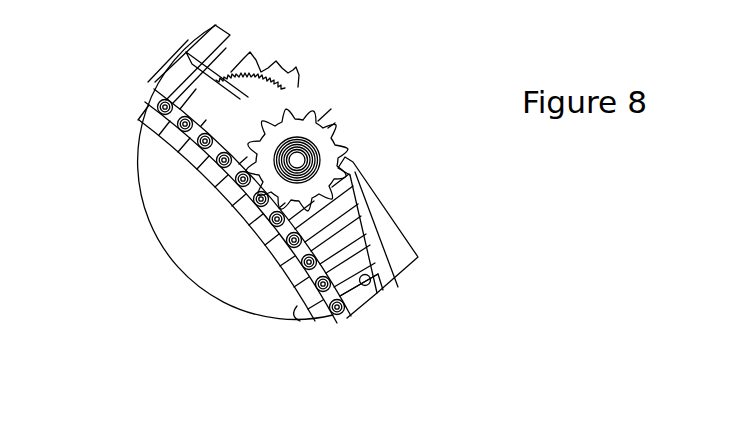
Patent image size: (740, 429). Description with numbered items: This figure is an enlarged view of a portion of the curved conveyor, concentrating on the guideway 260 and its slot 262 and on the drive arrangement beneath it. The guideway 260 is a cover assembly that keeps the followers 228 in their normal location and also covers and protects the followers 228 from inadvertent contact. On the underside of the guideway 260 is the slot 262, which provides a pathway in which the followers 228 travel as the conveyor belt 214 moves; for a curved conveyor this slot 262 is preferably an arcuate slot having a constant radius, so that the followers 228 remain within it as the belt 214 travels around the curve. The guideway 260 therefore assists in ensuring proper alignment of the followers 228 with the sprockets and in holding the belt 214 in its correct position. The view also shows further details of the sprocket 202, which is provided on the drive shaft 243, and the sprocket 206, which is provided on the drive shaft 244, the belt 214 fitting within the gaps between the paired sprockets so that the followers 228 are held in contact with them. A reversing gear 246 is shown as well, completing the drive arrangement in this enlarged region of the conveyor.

The sprocket 202 is at (340, 152).
The sprocket 206 is at (250, 53).
The belt 214 is at (195, 242).
The followers 228 is at (292, 318).
The drive shaft 243 is at (302, 157).
The drive shaft 244 is at (290, 95).
The reversing gear 246 is at (278, 72).
The guideway 260 is at (375, 302).
The slot 262 is at (152, 98).